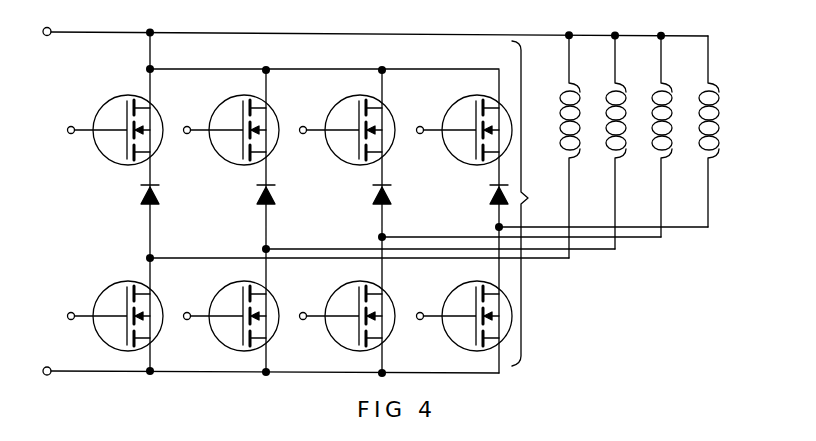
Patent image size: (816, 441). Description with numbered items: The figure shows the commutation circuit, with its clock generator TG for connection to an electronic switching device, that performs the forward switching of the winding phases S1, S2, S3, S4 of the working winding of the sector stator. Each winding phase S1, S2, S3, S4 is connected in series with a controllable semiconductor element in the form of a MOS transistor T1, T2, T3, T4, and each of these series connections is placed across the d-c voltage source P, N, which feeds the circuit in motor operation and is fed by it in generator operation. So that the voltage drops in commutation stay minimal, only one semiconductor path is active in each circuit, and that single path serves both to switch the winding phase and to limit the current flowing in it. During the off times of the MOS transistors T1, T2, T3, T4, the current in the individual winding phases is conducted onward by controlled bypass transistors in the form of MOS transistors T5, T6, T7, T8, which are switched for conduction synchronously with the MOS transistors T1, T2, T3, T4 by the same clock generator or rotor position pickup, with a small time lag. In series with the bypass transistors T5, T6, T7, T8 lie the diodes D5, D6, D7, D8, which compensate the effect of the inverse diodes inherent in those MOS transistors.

The positive terminal of d-c voltage source P is at (365, 32).
The negative terminal of d-c voltage source N is at (264, 370).
The clock generator TG is at (532, 203).
The MOS transistor T1 is at (116, 282).
The MOS transistor T2 is at (232, 282).
The MOS transistor T3 is at (348, 282).
The MOS transistor T4 is at (465, 282).
The bypass transistor T5 is at (116, 96).
The bypass transistor T6 is at (232, 96).
The bypass transistor T7 is at (348, 96).
The bypass transistor T8 is at (465, 96).
The diode D5 is at (141, 196).
The diode D6 is at (257, 196).
The diode D7 is at (373, 196).
The diode D8 is at (490, 196).
The winding phase S1 is at (561, 98).
The winding phase S2 is at (607, 98).
The winding phase S3 is at (653, 98).
The winding phase S4 is at (700, 98).